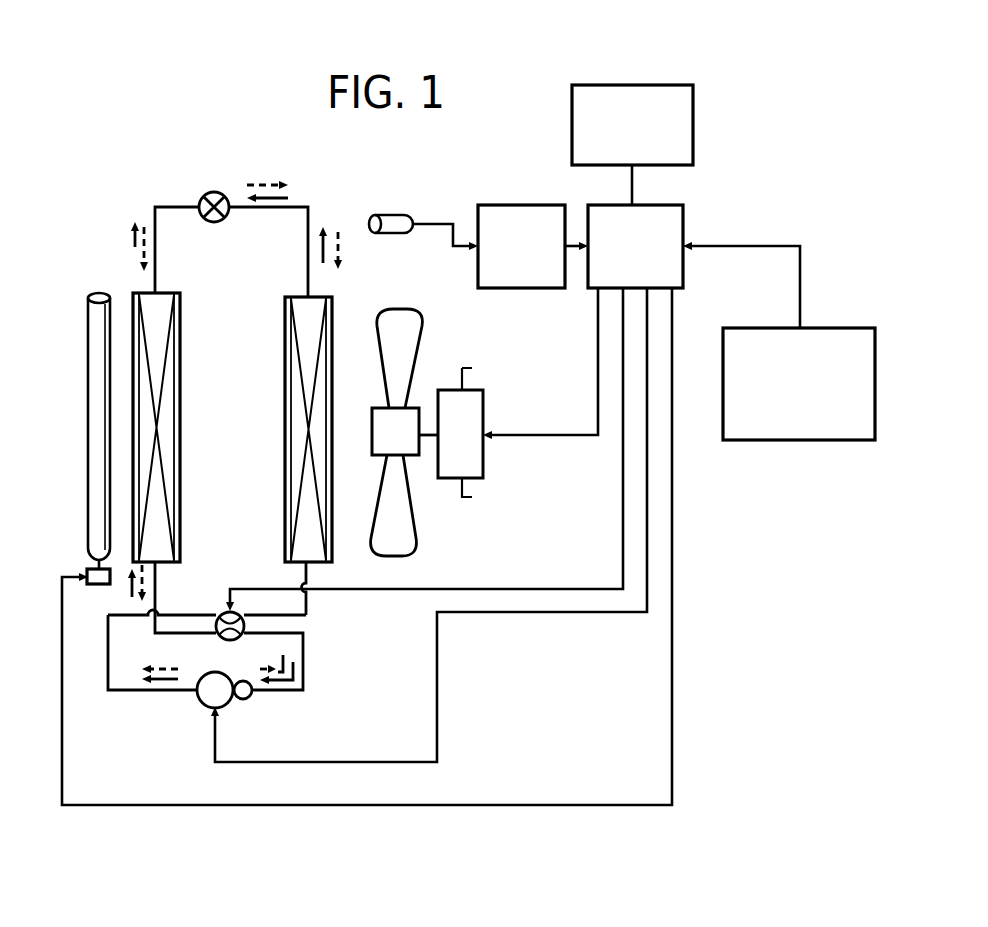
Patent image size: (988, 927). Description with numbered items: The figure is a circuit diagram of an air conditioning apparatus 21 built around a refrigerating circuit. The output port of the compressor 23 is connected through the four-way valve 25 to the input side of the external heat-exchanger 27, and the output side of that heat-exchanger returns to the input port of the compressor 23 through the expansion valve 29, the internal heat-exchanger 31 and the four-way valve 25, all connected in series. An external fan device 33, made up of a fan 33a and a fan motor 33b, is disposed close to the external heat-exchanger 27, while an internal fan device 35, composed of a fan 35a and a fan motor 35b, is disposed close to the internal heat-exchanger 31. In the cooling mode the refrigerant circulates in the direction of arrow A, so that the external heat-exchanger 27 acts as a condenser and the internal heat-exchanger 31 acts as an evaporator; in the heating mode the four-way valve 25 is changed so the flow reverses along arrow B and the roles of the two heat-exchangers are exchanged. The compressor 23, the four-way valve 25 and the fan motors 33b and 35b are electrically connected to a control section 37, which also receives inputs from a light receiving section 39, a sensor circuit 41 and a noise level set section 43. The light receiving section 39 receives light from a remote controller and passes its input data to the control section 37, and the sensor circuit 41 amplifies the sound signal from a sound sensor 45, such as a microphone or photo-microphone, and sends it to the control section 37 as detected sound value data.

The air conditioning apparatus 21 is at (185, 184).
The compressor 23 is at (205, 706).
The four-way valve 25 is at (223, 612).
The external heat-exchanger 27 is at (285, 349).
The expansion valve 29 is at (224, 197).
The internal heat-exchanger 31 is at (181, 322).
The external fan device 33 is at (471, 407).
The fan 33a is at (423, 290).
The fan motor 33b is at (484, 401).
The internal fan device 35 is at (68, 401).
The fan 35a is at (99, 293).
The fan motor 35b is at (88, 572).
The control section 37 is at (684, 219).
The light receiving section 39 is at (653, 85).
The sensor circuit 41 is at (505, 205).
The noise level set section 43 is at (821, 328).
The sound sensor 45 is at (395, 212).